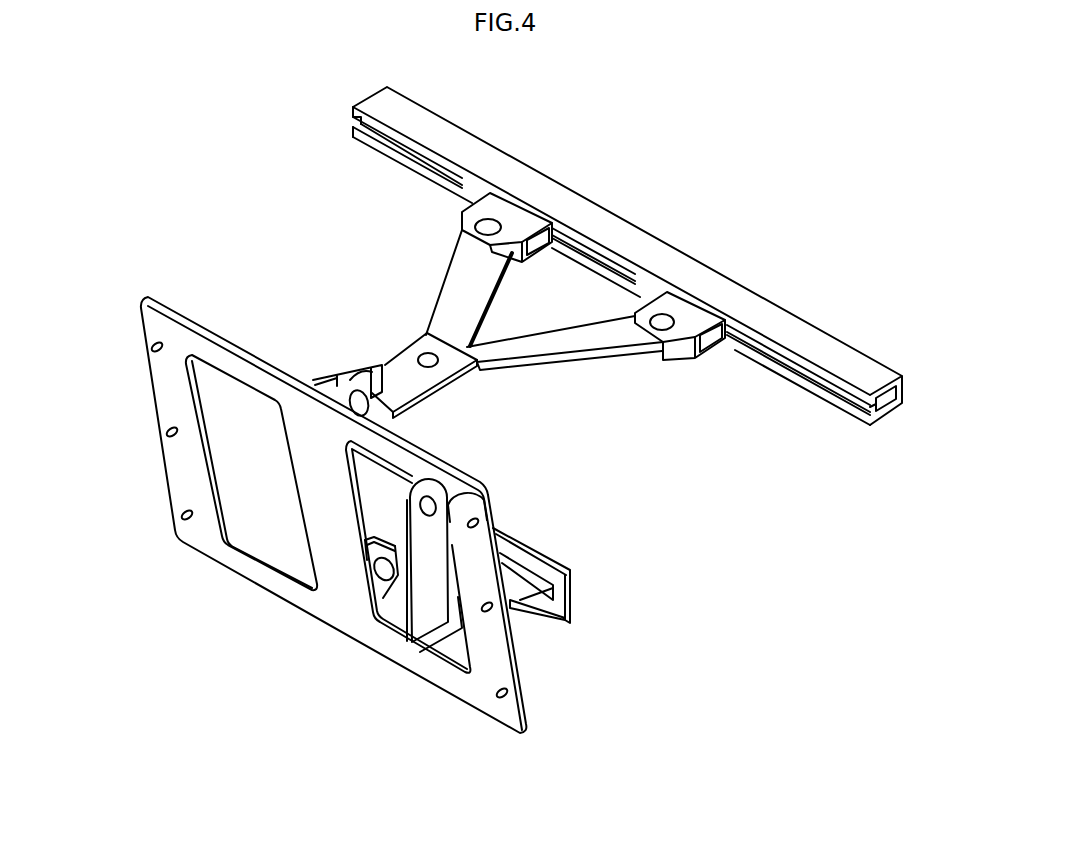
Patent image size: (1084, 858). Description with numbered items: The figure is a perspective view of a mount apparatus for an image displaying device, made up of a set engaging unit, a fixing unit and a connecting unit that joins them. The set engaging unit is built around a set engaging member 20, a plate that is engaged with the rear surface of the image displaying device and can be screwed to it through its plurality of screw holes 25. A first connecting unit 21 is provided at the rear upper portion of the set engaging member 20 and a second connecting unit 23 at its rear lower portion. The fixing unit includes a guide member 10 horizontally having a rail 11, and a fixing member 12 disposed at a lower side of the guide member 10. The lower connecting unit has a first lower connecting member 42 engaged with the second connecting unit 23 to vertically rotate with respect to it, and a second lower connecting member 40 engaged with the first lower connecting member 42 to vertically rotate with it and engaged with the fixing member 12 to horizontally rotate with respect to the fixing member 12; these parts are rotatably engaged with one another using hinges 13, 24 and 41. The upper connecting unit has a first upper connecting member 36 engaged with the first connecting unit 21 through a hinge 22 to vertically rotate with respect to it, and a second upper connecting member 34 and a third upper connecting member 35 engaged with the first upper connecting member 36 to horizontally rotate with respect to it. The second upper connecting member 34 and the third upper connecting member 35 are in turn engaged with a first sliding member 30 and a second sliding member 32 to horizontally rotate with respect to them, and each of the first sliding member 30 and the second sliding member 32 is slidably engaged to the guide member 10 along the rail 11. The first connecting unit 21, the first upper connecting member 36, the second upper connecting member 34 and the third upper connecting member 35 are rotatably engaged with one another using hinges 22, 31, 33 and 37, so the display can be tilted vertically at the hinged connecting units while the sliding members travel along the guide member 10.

The guide member 10 is at (848, 347).
The rail 11 is at (900, 401).
The fixing member 12 is at (572, 572).
The hinge 13 is at (523, 578).
The set engaging member 20 is at (318, 602).
The first connecting unit 21 is at (348, 393).
The hinge 22 is at (340, 379).
The second connecting unit 23 is at (383, 602).
The hinge 24 is at (383, 580).
The screw holes 25 is at (183, 514).
The first sliding member 30 is at (673, 318).
The hinge 31 is at (677, 303).
The second sliding member 32 is at (527, 218).
The hinge 33 is at (492, 221).
The second upper connecting member 34 is at (583, 347).
The third upper connecting member 35 is at (446, 294).
The first upper connecting member 36 is at (393, 353).
The hinge 37 is at (425, 352).
The second lower connecting member 40 is at (492, 505).
The hinge 41 is at (437, 506).
The first lower connecting member 42 is at (374, 539).